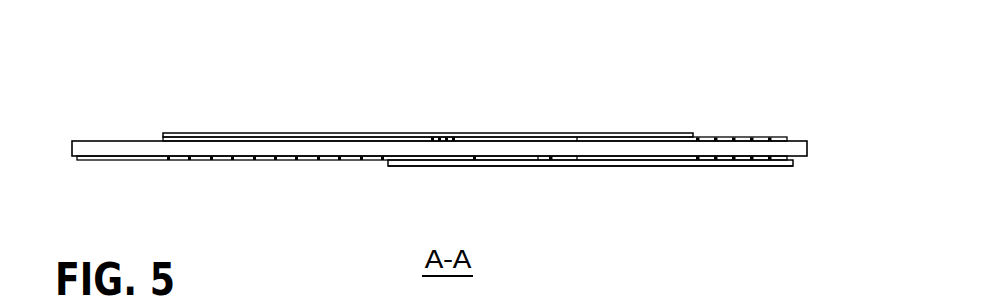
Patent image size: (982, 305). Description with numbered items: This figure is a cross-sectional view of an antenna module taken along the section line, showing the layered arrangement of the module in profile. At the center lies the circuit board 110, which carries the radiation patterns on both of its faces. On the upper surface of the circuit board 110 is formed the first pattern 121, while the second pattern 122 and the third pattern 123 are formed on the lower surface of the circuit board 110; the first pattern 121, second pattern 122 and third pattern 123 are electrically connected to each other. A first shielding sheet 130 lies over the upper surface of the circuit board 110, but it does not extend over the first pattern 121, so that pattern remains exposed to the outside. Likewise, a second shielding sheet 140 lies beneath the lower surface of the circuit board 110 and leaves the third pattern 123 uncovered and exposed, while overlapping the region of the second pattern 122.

The circuit board 110 is at (808, 139).
The first pattern 121 is at (742, 140).
The second pattern 122 is at (758, 163).
The third pattern 123 is at (242, 161).
The first shielding sheet 130 is at (505, 124).
The second shielding sheet 140 is at (797, 183).